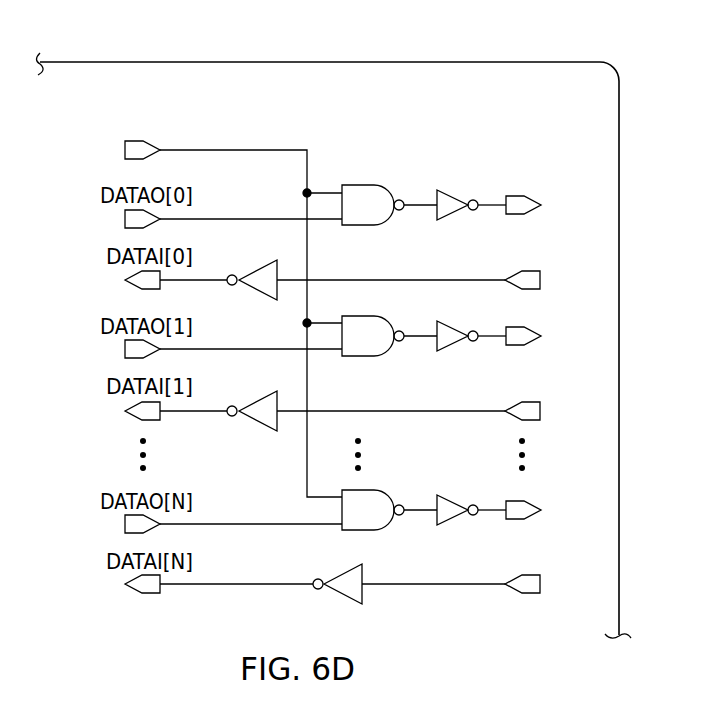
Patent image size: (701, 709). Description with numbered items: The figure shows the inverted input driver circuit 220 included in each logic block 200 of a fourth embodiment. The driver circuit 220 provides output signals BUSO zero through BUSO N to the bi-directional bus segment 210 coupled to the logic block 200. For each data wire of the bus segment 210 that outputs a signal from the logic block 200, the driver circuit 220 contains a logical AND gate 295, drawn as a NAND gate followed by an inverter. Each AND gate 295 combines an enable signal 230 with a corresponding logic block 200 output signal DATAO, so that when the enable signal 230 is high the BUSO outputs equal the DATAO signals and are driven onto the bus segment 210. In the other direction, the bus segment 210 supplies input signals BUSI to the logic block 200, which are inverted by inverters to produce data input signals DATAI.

The logic block 200 is at (530, 70).
The bi-directional bus segment 210 is at (564, 286).
The inverted input driver circuit 220 is at (359, 116).
The enable signal 230 is at (125, 151).
The logical AND gate 295 is at (465, 168).